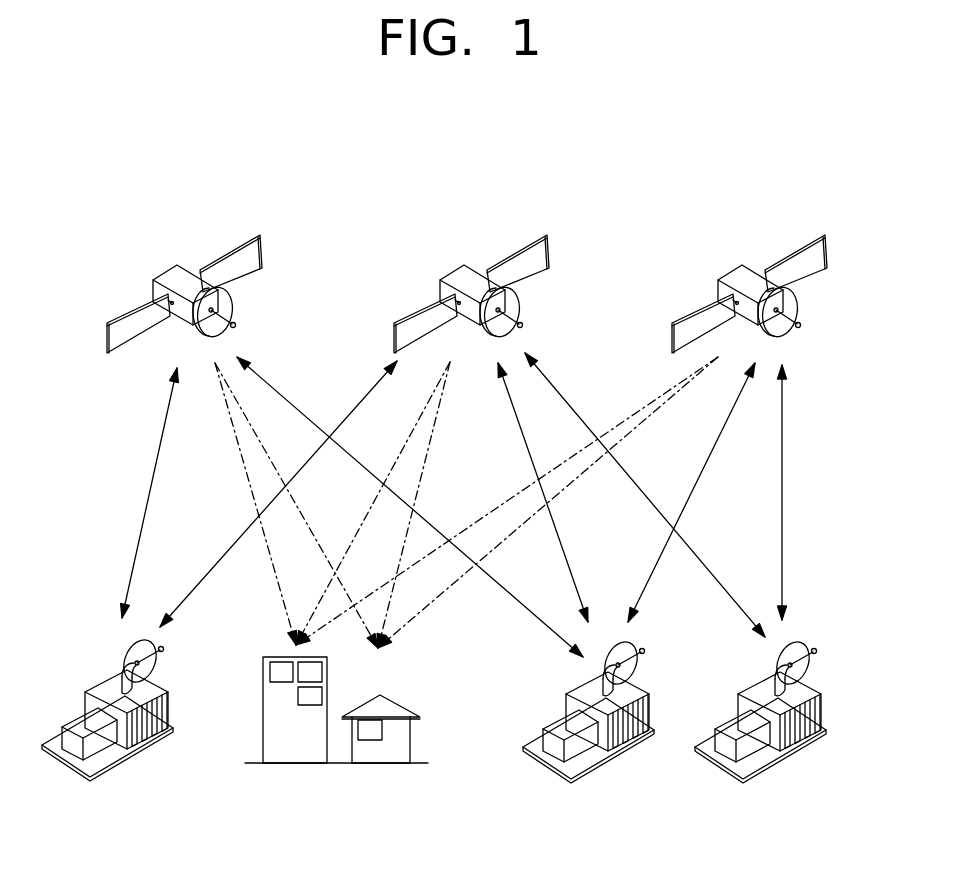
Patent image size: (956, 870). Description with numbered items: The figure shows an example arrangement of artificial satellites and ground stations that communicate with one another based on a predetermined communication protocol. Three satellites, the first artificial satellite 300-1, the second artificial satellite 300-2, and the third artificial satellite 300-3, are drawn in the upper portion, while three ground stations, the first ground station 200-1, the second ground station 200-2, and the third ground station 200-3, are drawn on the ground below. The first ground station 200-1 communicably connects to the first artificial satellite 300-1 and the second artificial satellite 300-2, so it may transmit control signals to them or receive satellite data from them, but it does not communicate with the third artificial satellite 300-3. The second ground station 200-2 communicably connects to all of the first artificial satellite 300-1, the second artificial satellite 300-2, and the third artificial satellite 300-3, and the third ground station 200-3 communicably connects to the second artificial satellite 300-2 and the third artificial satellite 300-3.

The first artificial satellite 300-1 is at (182, 270).
The second artificial satellite 300-2 is at (469, 270).
The third artificial satellite 300-3 is at (747, 270).
The first ground station 200-1 is at (120, 765).
The second ground station 200-2 is at (603, 767).
The third ground station 200-3 is at (776, 767).